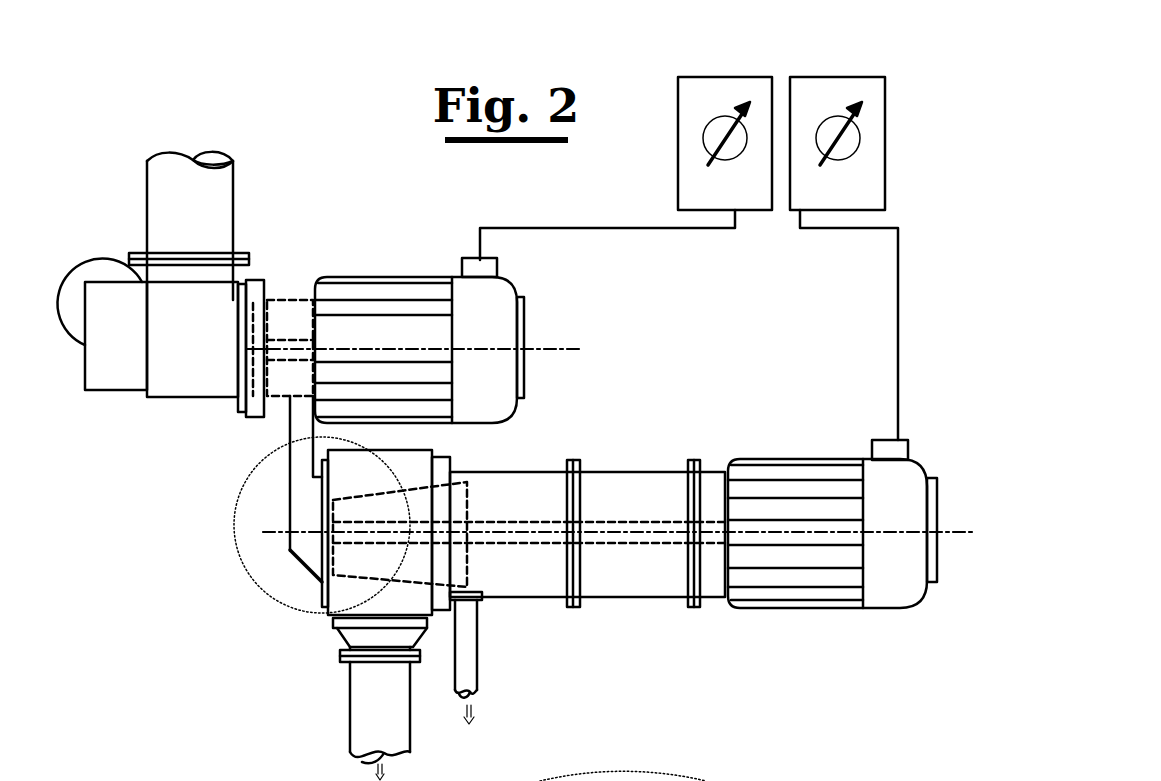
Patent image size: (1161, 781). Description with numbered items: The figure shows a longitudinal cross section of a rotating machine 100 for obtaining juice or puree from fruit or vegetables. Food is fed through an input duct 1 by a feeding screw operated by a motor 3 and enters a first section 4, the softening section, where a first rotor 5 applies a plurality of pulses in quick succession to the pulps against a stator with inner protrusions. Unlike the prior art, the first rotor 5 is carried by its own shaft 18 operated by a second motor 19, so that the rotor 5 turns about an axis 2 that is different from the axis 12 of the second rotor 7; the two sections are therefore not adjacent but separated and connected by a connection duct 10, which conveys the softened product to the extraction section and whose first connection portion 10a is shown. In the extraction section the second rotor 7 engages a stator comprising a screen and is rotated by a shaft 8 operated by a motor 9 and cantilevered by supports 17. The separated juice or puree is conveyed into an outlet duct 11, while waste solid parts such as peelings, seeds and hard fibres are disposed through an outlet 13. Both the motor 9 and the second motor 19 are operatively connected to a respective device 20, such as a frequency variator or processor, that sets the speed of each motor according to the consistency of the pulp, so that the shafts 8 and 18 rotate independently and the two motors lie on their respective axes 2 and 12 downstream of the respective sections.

The input duct 1 is at (202, 370).
The axis 2 is at (550, 347).
The motor 3 is at (98, 267).
The first section 4 is at (279, 403).
The first rotor 5 is at (280, 307).
The second rotor 7 is at (468, 497).
The shaft 8 is at (622, 520).
The motor 9 is at (790, 480).
The connection duct 10 is at (292, 492).
The first connection portion 10a is at (305, 567).
The outlet duct 11 is at (355, 680).
The axis 12 is at (277, 533).
The outlet 13 is at (472, 643).
The supports 17 is at (623, 478).
The shaft 18 is at (287, 335).
The second motor 19 is at (417, 298).
The device 20 is at (708, 95).
The machine 100 is at (803, 668).